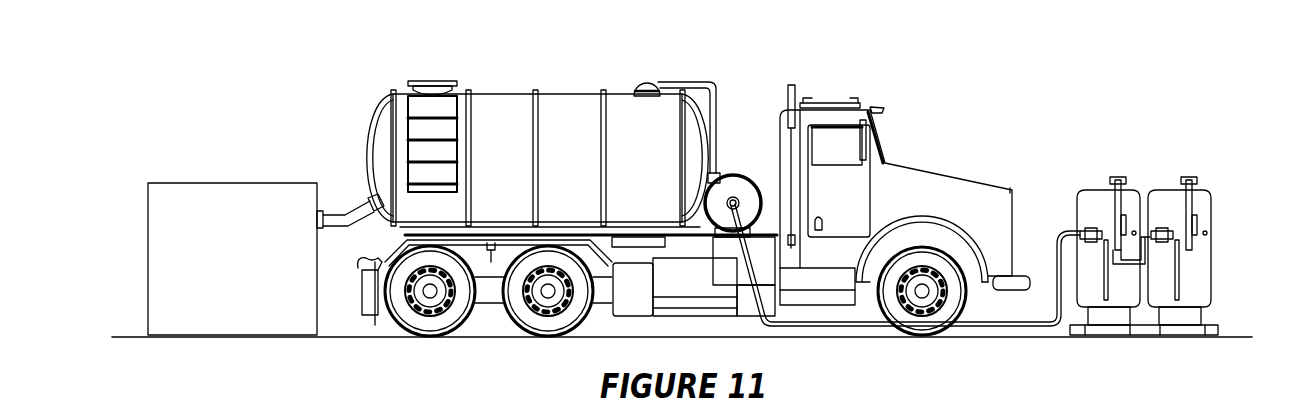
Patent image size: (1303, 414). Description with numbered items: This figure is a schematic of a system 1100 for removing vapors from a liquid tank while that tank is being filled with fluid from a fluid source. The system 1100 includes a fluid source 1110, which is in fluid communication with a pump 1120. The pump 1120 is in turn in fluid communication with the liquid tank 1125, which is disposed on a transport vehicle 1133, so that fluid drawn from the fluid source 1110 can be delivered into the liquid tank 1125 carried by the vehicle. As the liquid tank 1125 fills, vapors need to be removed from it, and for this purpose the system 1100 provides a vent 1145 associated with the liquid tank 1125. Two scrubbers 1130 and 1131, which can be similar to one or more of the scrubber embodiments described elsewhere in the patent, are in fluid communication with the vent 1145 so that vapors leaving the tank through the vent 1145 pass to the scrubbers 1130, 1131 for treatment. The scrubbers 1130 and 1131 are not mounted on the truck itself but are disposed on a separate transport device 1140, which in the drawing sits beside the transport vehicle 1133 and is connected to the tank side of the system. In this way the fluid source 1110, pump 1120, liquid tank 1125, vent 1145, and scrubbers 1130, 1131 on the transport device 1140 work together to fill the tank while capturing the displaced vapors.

The system 1100 is at (286, 74).
The fluid source 1110 is at (232, 183).
The pump 1120 is at (735, 175).
The liquid tank 1125 is at (566, 94).
The scrubber 1130 is at (1093, 190).
The scrubber 1131 is at (1165, 190).
The transport vehicle 1133 is at (946, 156).
The transport device 1140 is at (1218, 325).
The vent 1145 is at (645, 80).